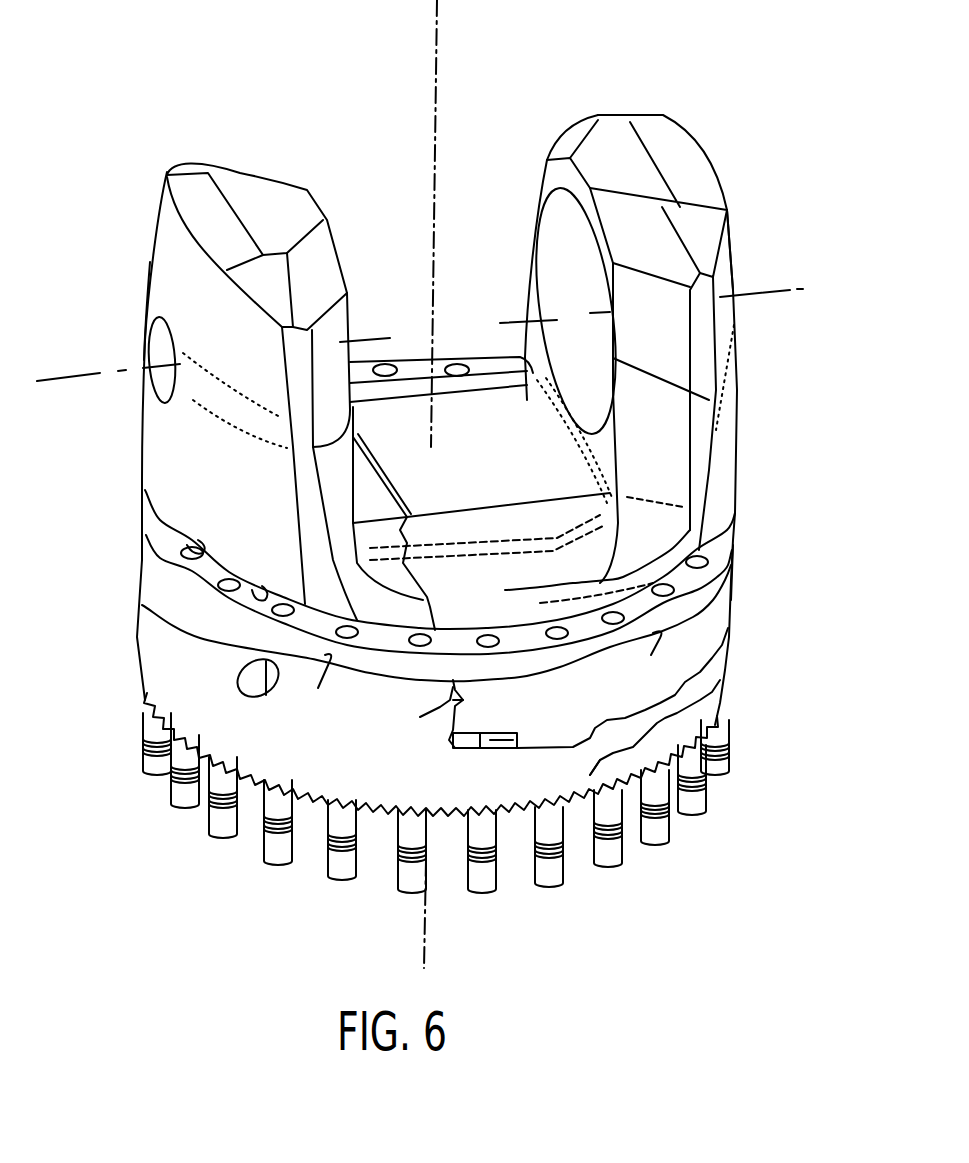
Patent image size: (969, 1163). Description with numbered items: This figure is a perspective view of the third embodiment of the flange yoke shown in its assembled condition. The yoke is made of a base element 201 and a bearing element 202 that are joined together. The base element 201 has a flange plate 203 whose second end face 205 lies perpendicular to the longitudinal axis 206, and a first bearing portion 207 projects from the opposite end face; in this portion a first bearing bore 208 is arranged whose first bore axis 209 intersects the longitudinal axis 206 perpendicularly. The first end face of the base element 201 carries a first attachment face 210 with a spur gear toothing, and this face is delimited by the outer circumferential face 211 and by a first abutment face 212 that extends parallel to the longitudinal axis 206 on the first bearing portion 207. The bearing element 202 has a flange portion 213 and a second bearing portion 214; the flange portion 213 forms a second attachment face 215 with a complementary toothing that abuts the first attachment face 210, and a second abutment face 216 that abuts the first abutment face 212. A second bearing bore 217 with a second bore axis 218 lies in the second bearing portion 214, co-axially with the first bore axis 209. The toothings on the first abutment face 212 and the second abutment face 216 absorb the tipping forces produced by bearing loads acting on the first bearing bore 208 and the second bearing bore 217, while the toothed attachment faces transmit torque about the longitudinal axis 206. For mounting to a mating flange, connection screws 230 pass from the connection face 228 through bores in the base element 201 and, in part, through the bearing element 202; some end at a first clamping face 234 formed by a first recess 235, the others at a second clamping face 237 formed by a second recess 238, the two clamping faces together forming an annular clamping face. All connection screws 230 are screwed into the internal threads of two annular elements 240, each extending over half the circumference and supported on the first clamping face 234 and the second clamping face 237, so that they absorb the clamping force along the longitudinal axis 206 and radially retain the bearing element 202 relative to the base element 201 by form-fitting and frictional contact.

The base element 201 is at (207, 143).
The bearing element 202 is at (622, 100).
The flange plate 203 is at (615, 763).
The second end face 205 is at (513, 868).
The longitudinal axis 206 is at (438, 28).
The first bearing portion 207 is at (153, 257).
The first bearing bore 208 is at (172, 398).
The first bore axis 209 is at (83, 373).
The first attachment face 210 is at (557, 752).
The outer circumferential face 211 is at (138, 602).
The first abutment face 212 is at (463, 700).
The flange portion 213 is at (537, 740).
The second bearing portion 214 is at (713, 195).
The second attachment face 215 is at (658, 717).
The second abutment face 216 is at (440, 719).
The second bearing bore 217 is at (537, 372).
The second bore axis 218 is at (760, 294).
The connection face 228 is at (312, 787).
The connection screws 230 is at (410, 877).
The first clamping face 234 is at (323, 686).
The first recess 235 is at (277, 588).
The second clamping face 237 is at (653, 657).
The second recess 238 is at (730, 532).
The annular elements 240 is at (227, 613).